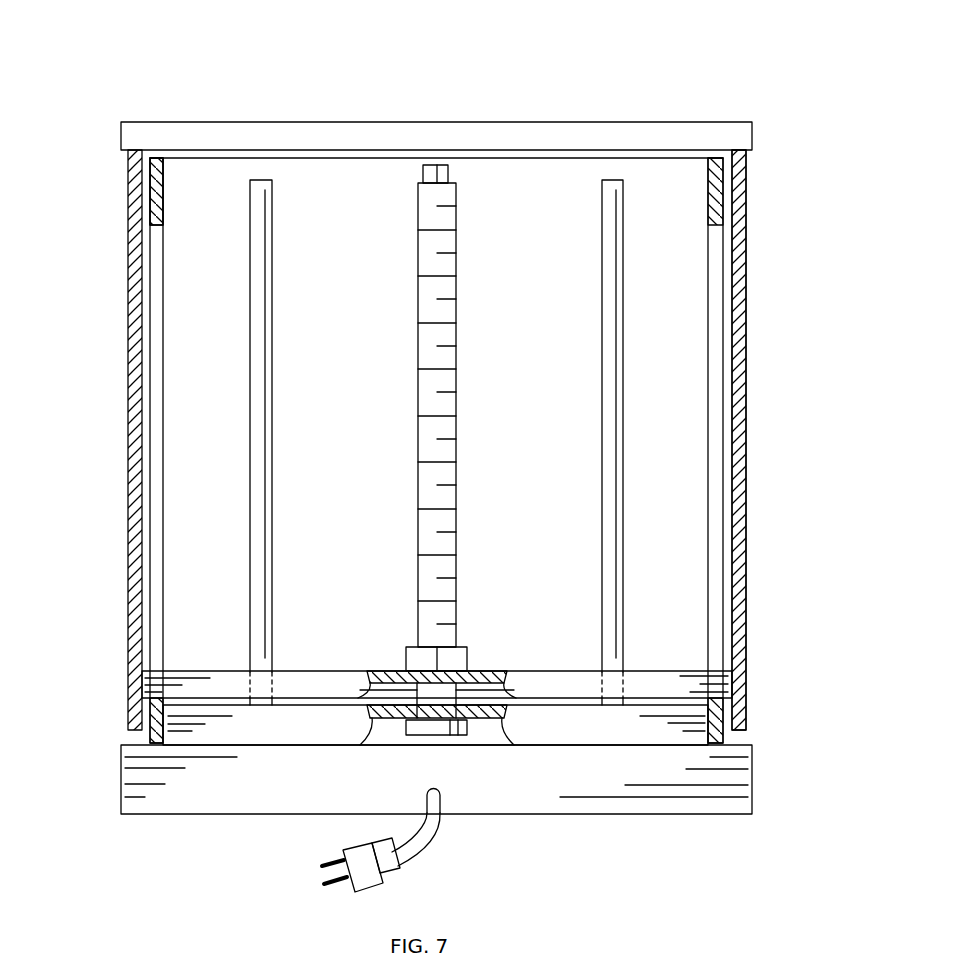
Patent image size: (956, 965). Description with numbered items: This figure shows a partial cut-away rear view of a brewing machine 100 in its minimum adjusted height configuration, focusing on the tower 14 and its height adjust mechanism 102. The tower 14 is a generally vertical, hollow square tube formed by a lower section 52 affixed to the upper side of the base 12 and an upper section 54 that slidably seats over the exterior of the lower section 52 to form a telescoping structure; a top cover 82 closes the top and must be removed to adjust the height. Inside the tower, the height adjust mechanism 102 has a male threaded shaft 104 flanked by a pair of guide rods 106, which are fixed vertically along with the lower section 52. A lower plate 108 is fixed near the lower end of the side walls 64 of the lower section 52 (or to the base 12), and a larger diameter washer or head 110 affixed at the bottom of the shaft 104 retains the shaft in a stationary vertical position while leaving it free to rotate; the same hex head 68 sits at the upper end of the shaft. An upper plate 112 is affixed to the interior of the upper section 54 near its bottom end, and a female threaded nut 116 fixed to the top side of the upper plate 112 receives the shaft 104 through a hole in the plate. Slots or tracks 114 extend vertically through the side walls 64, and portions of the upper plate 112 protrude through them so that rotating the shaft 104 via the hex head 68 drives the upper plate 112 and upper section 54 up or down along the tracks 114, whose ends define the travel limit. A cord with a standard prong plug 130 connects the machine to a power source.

The brewing machine 100 is at (721, 80).
The top cover 82 is at (133, 128).
The lower section 52 is at (170, 184).
The side walls 64 is at (165, 195).
The hex head 68 is at (442, 175).
The guide rods 106 is at (254, 385).
The height adjust mechanism 102 is at (654, 322).
The upper section 54 is at (755, 330).
The threaded shaft 104 is at (450, 380).
The slots or tracks 114 is at (160, 470).
The tower 14 is at (755, 478).
The upper plate 112 is at (222, 683).
The female threaded nut 116 is at (458, 658).
The base 12 is at (757, 762).
The washer or head 110 is at (410, 735).
The lower plate 108 is at (618, 722).
The plug 130 is at (360, 850).